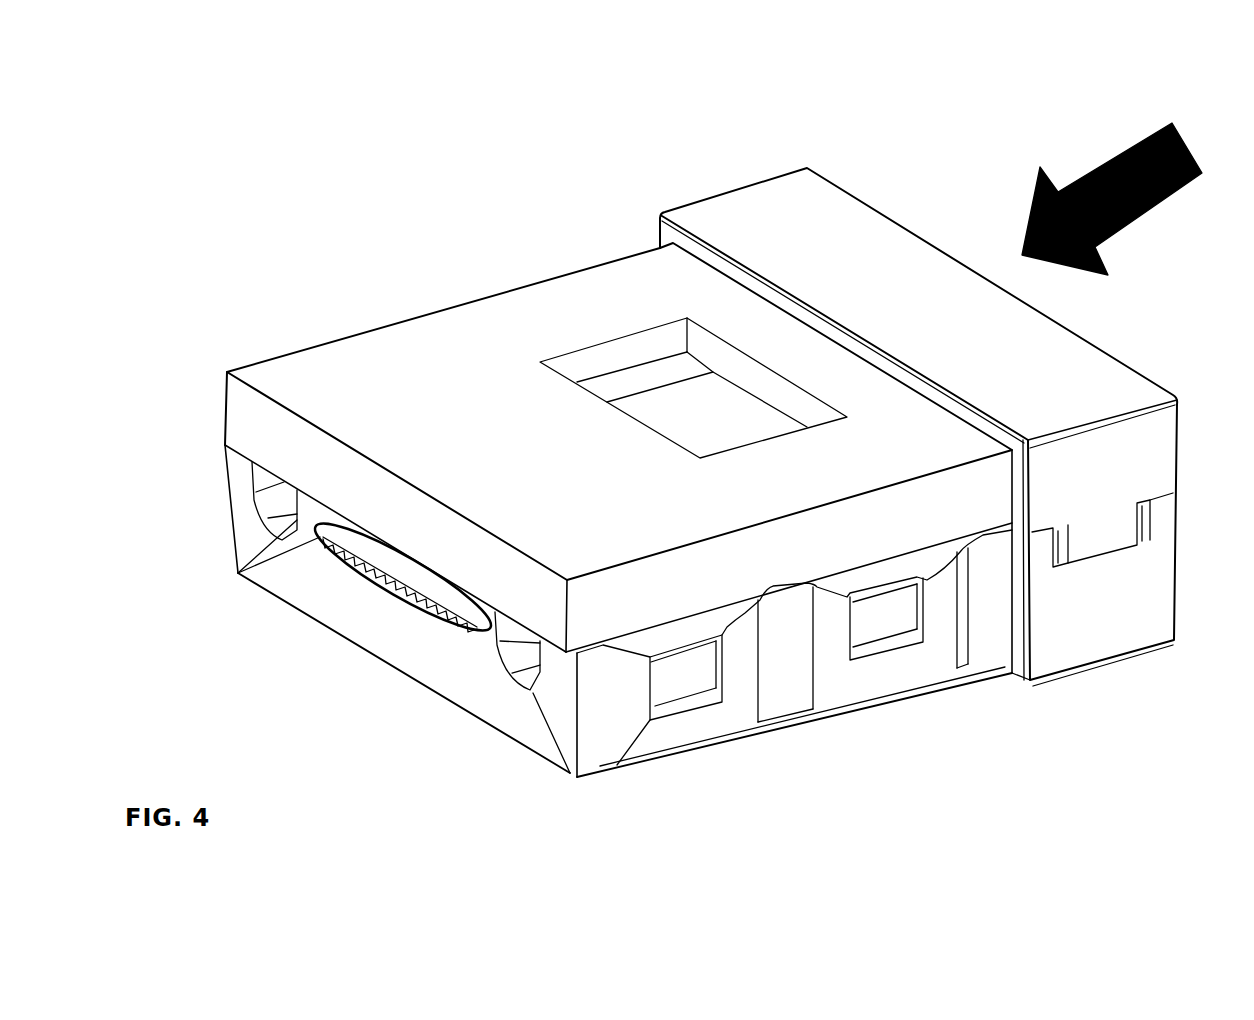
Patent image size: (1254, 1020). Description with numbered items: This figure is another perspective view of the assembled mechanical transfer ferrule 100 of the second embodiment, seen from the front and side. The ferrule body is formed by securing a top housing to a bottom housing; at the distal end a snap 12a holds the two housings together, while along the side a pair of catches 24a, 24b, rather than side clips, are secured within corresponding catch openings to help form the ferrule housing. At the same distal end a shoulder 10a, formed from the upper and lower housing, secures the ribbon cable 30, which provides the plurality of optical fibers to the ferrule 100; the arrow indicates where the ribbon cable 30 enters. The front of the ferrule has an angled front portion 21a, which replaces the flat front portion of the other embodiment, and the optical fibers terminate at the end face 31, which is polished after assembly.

The mechanical transfer ferrule 100 is at (157, 229).
The shoulder 10a is at (918, 427).
The ribbon cable 30 is at (1137, 260).
The end face 31 is at (323, 570).
The angled front portion 21a is at (403, 657).
The catch 24a is at (687, 690).
The catch 24b is at (895, 605).
The snap 12a is at (1093, 530).